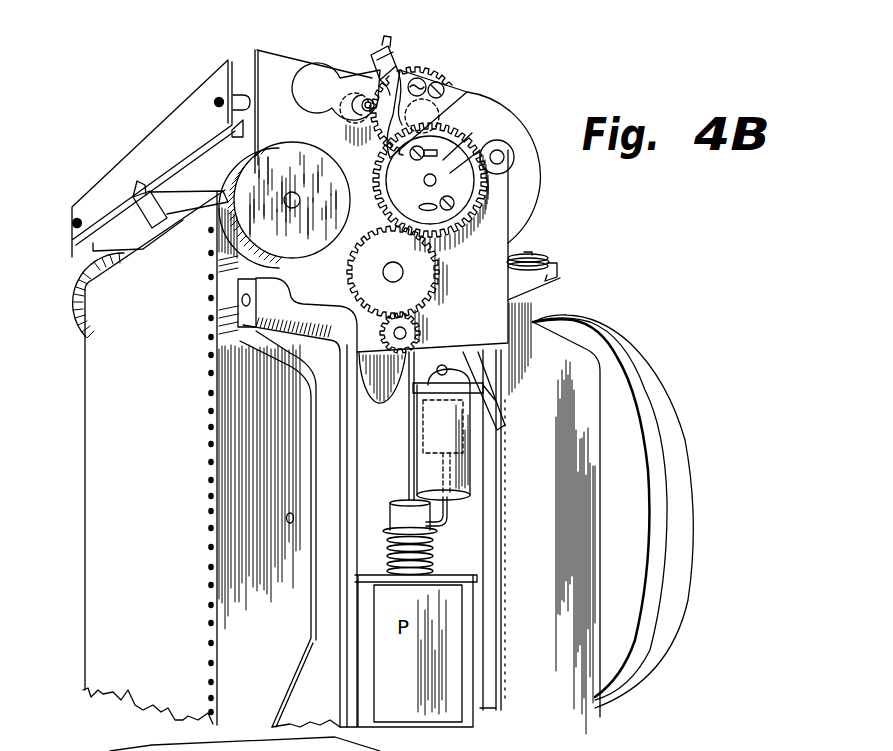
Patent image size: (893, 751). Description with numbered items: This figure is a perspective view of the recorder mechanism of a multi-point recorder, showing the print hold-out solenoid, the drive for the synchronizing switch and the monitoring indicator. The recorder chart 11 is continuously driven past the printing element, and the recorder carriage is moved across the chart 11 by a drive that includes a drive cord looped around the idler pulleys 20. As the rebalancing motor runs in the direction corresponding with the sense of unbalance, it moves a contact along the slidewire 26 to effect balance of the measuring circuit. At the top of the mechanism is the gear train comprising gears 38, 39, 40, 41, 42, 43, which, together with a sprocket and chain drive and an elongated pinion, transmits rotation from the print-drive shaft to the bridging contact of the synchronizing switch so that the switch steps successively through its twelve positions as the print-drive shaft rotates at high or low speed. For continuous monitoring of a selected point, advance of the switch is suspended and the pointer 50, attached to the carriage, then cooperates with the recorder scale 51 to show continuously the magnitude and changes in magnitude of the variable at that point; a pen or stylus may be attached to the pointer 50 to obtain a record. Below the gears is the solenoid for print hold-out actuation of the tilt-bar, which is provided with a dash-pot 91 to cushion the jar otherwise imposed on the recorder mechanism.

The recorder chart 11 is at (130, 565).
The idler pulley 20 is at (546, 256).
The slidewire 26 is at (672, 440).
The gear 38 is at (353, 100).
The gear 39 is at (427, 68).
The gear 40 is at (390, 73).
The gear 41 is at (460, 153).
The gear 42 is at (412, 268).
The gear 43 is at (405, 324).
The pointer 50 is at (134, 180).
The recorder scale 51 is at (182, 110).
The dash-pot 91 is at (462, 462).